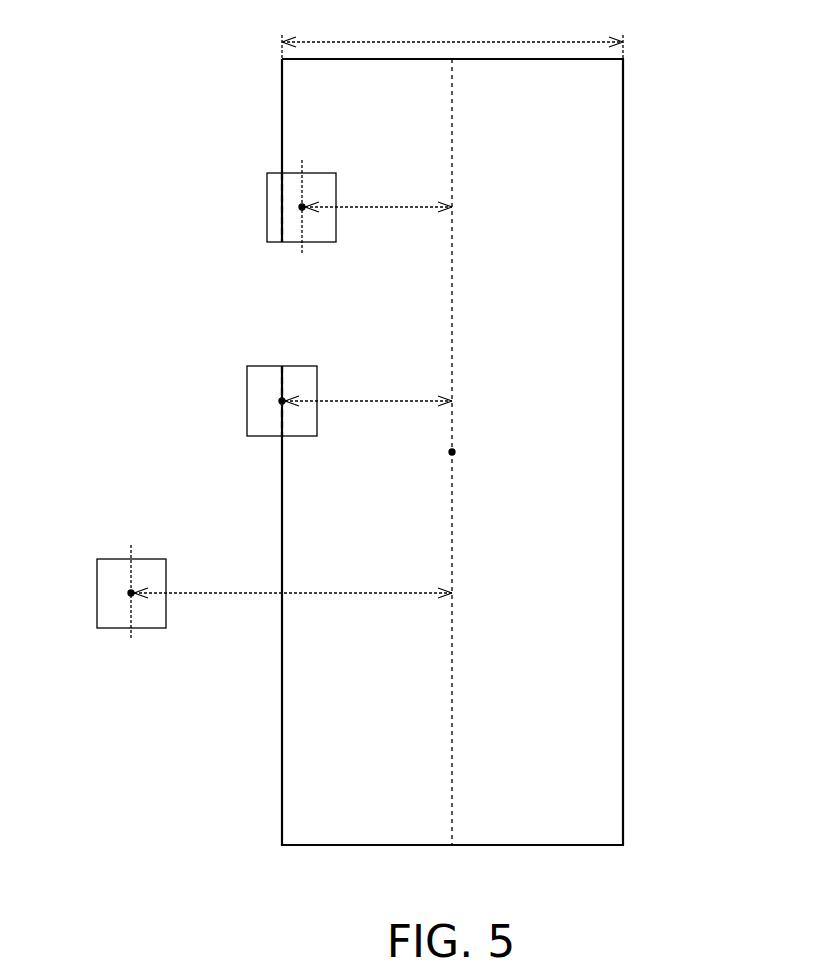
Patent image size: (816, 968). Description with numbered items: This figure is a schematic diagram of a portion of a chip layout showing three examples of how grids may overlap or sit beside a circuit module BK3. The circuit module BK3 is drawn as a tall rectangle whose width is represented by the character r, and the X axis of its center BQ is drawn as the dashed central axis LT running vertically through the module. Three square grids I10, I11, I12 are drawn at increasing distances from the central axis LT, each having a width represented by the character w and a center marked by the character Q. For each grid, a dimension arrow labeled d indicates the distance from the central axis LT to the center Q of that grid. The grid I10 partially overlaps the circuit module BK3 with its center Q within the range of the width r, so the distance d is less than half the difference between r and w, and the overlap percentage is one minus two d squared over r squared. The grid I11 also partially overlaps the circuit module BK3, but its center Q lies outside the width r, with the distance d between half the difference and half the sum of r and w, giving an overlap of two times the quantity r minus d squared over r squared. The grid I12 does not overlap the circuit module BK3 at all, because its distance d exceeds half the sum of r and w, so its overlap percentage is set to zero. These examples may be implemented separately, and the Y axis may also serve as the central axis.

The circuit module BK3 is at (623, 312).
The central axis LT is at (452, 750).
The center of the circuit module BQ is at (455, 452).
The grid I10 is at (267, 207).
The grid I11 is at (247, 401).
The grid I12 is at (97, 593).
The center of the grid Q is at (228, 382).
The distance d is at (336, 387).
The width of the grid w is at (216, 455).
The width of the circuit module r is at (452, 34).